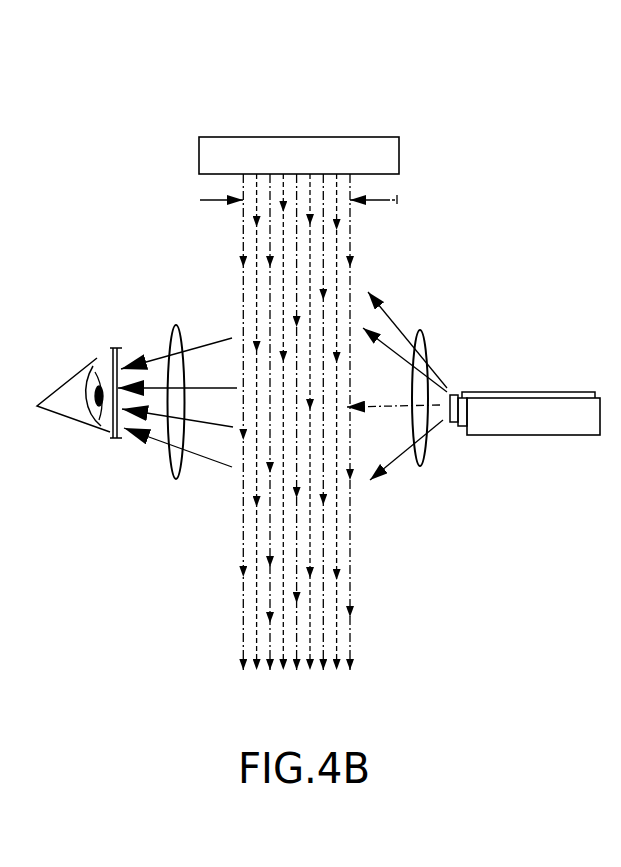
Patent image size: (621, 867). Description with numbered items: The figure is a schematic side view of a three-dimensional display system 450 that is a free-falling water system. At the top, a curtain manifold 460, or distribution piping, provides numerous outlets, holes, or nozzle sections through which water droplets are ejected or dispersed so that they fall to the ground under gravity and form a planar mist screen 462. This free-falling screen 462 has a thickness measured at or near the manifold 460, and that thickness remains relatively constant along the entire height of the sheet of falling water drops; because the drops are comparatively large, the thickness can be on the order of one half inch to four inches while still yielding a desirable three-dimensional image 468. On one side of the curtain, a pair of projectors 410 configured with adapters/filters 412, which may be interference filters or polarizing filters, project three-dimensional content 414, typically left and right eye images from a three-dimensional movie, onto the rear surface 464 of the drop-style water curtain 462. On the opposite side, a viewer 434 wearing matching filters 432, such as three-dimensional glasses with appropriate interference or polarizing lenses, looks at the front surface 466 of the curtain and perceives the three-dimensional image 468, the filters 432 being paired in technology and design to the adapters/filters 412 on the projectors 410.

The 3D display system 450 is at (463, 53).
The curtain manifold 460 is at (312, 123).
The mist screen 462 is at (225, 602).
The rear surface 464 is at (350, 540).
The front surface 466 is at (243, 503).
The 3D image 468 is at (170, 328).
The filters 432 is at (117, 443).
The viewer 434 is at (70, 427).
The 3D content 414 is at (428, 353).
The adapters/filters 412 is at (453, 427).
The projectors 410 is at (465, 428).